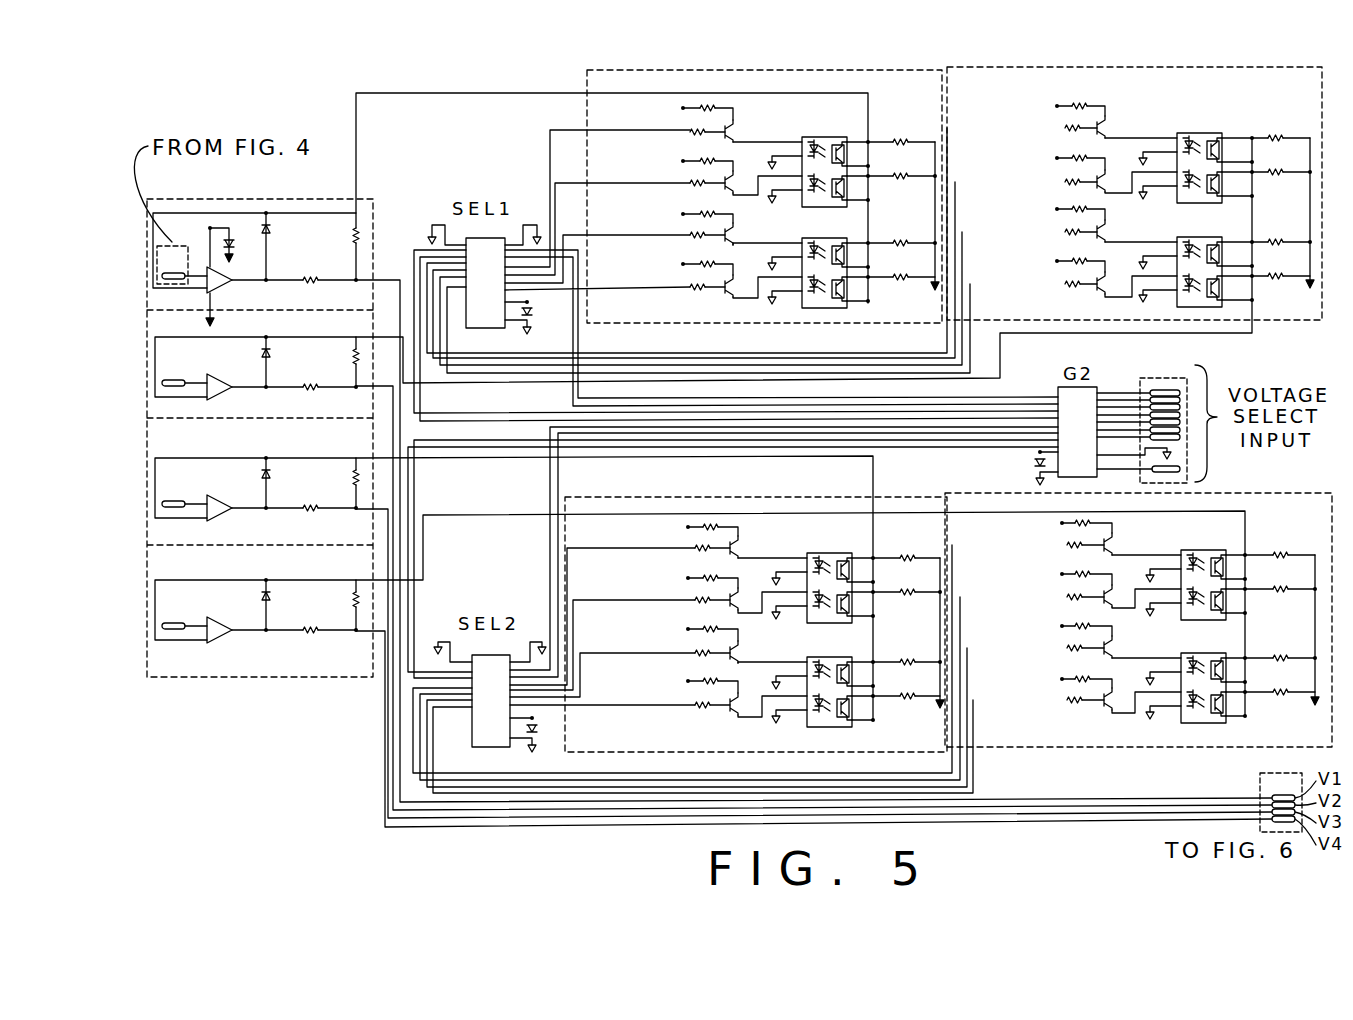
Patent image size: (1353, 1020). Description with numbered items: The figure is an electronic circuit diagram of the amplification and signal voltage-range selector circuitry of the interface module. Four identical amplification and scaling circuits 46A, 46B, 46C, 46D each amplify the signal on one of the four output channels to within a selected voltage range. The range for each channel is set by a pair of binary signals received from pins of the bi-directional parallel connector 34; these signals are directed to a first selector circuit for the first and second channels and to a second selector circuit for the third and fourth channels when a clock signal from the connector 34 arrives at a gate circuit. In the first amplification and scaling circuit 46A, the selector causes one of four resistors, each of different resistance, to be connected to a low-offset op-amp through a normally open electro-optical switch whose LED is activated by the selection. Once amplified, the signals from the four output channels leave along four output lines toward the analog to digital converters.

The amplification and scaling circuit 46A is at (547, 198).
The amplification and scaling circuit 46B is at (738, 226).
The amplification and scaling circuit 46C is at (551, 604).
The amplification and scaling circuit 46D is at (743, 620).
The bi-directional parallel connector 34 is at (1192, 366).